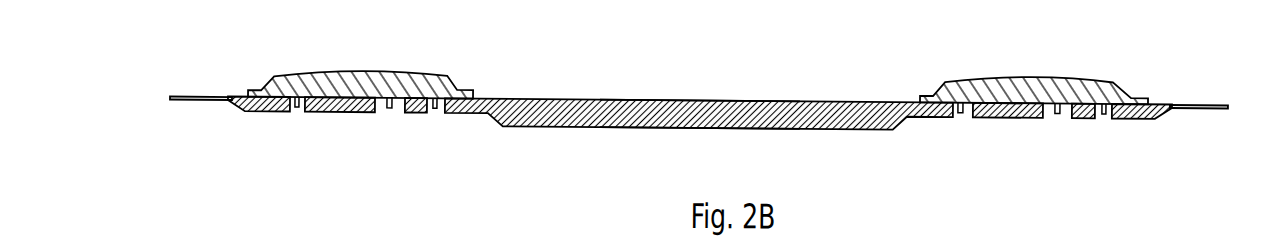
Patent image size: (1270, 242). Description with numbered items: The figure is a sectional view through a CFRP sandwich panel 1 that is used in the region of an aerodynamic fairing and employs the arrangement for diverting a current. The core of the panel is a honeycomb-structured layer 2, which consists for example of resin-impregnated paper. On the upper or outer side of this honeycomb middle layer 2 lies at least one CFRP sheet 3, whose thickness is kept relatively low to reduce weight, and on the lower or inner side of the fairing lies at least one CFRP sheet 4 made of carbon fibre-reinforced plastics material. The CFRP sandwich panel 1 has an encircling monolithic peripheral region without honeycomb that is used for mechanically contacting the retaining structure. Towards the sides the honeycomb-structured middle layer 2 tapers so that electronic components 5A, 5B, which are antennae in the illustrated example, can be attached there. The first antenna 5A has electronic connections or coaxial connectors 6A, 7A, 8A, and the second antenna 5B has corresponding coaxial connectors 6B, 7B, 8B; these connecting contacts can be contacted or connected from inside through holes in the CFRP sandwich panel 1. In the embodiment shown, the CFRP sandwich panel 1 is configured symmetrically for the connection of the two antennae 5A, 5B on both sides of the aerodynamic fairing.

The CFRP sandwich panel 1 is at (925, 153).
The honeycomb-structured layer 2 is at (647, 112).
The CFRP sheet 3 is at (693, 100).
The CFRP sheet 4 is at (706, 128).
The electronic component 5A is at (360, 86).
The electronic component 5B is at (1032, 83).
The coaxial connector 6A is at (297, 111).
The coaxial connector 7A is at (390, 111).
The coaxial connector 8A is at (435, 111).
The coaxial connector 6B is at (1104, 111).
The coaxial connector 7B is at (1057, 111).
The coaxial connector 8B is at (961, 111).